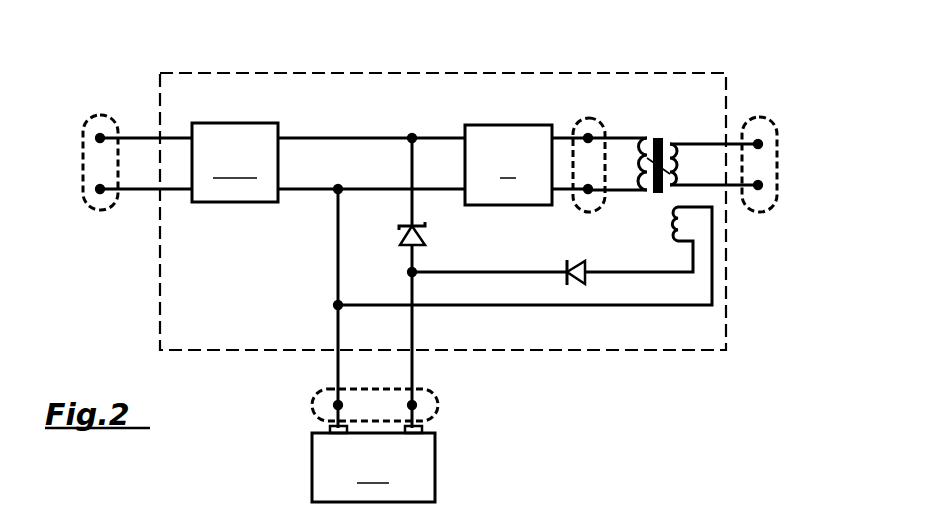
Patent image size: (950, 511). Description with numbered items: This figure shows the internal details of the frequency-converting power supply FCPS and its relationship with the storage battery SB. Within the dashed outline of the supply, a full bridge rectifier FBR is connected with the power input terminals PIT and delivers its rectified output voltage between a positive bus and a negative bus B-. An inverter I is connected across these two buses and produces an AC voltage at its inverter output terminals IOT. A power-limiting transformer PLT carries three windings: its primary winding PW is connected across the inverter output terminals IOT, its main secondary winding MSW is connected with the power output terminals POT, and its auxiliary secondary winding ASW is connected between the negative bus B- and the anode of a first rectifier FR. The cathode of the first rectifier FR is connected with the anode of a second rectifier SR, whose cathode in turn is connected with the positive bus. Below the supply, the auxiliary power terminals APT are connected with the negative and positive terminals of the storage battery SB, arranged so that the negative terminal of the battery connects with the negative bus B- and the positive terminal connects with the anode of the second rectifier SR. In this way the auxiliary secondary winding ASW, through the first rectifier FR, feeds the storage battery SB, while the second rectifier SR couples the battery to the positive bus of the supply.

The frequency-converting power supply FCPS is at (578, 362).
The power input terminals PIT is at (97, 113).
The full bridge rectifier FBR is at (235, 162).
The B− bus B- is at (314, 191).
The inverter I is at (526, 165).
The inverter output terminals IOT is at (585, 121).
The primary winding PW is at (633, 168).
The power-limiting transformer PLT is at (667, 121).
The main secondary winding MSW is at (684, 164).
The power output terminals POT is at (777, 117).
The auxiliary secondary winding ASW is at (688, 222).
The first rectifier FR is at (574, 288).
The second rectifier SR is at (424, 232).
The auxiliary power terminals APT is at (318, 390).
The storage battery SB is at (373, 464).